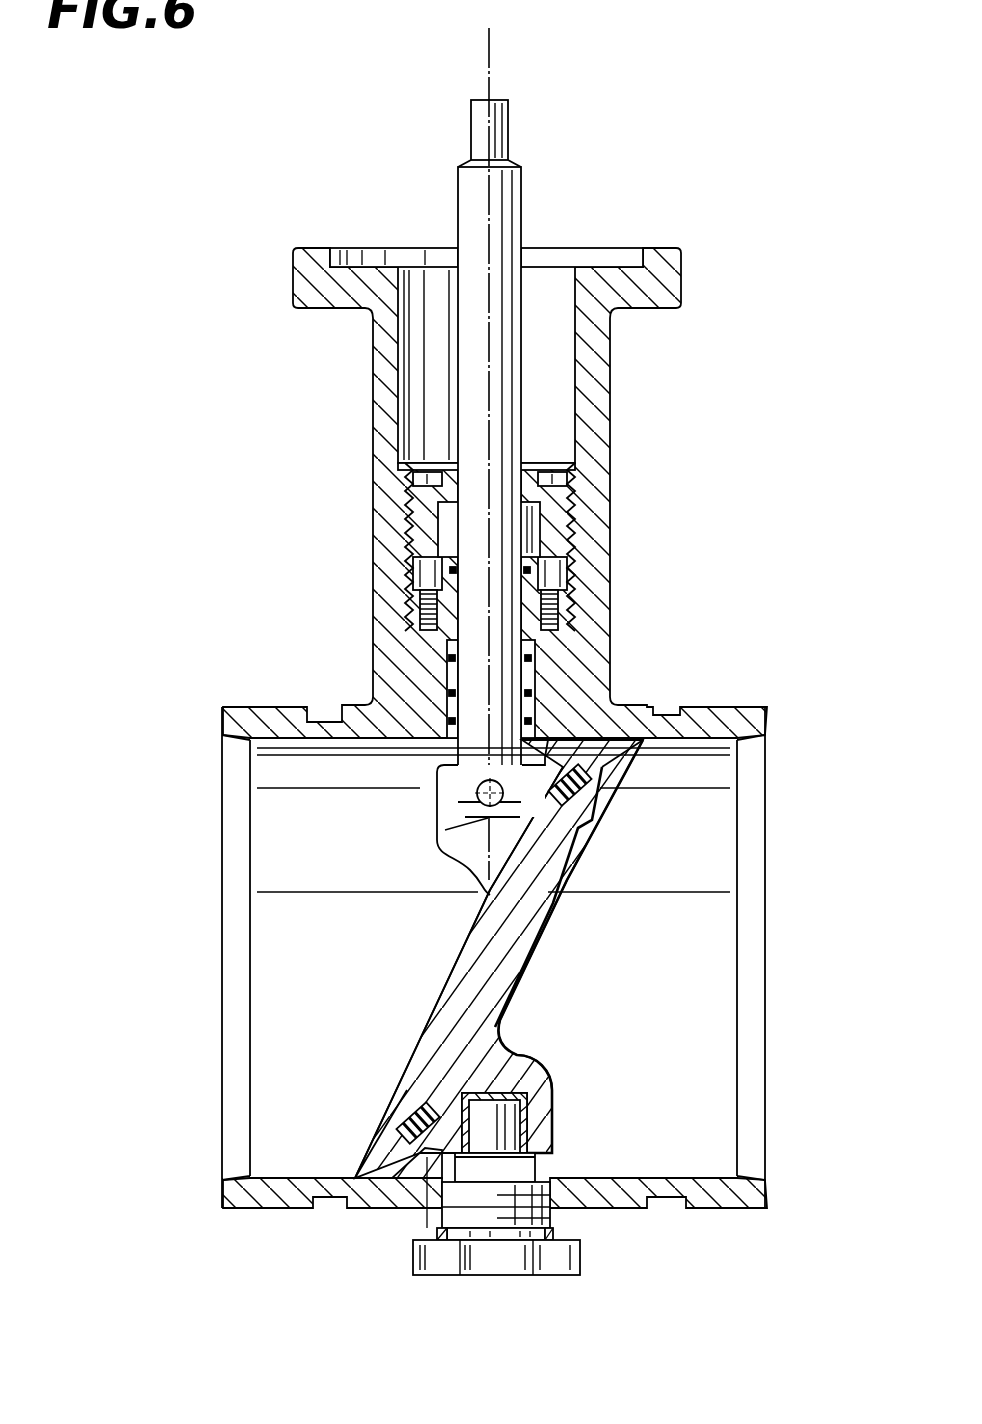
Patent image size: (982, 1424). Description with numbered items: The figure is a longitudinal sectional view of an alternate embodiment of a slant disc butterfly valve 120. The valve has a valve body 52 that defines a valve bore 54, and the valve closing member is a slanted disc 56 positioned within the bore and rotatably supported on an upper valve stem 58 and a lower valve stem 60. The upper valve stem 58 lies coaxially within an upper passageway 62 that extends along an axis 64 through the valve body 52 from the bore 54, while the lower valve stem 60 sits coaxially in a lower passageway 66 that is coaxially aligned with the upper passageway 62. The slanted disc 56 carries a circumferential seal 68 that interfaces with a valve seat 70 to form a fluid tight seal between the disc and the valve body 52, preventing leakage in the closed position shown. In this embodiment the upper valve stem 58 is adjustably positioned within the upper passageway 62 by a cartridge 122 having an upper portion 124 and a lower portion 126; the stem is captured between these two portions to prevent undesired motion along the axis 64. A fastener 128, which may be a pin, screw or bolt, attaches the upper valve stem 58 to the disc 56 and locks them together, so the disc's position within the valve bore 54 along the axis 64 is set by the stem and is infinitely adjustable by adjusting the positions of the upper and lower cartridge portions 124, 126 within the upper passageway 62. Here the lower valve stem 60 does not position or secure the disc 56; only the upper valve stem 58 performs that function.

The valve body 52 is at (705, 707).
The valve bore 54 is at (688, 853).
The slanted disc 56 is at (473, 997).
The upper valve stem 58 is at (507, 202).
The lower valve stem 60 is at (500, 1127).
The upper passageway 62 is at (563, 420).
The axis 64 is at (493, 40).
The lower passageway 66 is at (553, 1217).
The circumferential seal 68 is at (390, 1205).
The valve seat 70 is at (403, 1145).
The butterfly valve 120 is at (740, 368).
The cartridge 122 is at (565, 530).
The upper portion 124 is at (413, 530).
The lower portion 126 is at (413, 587).
The fastener 128 is at (478, 786).